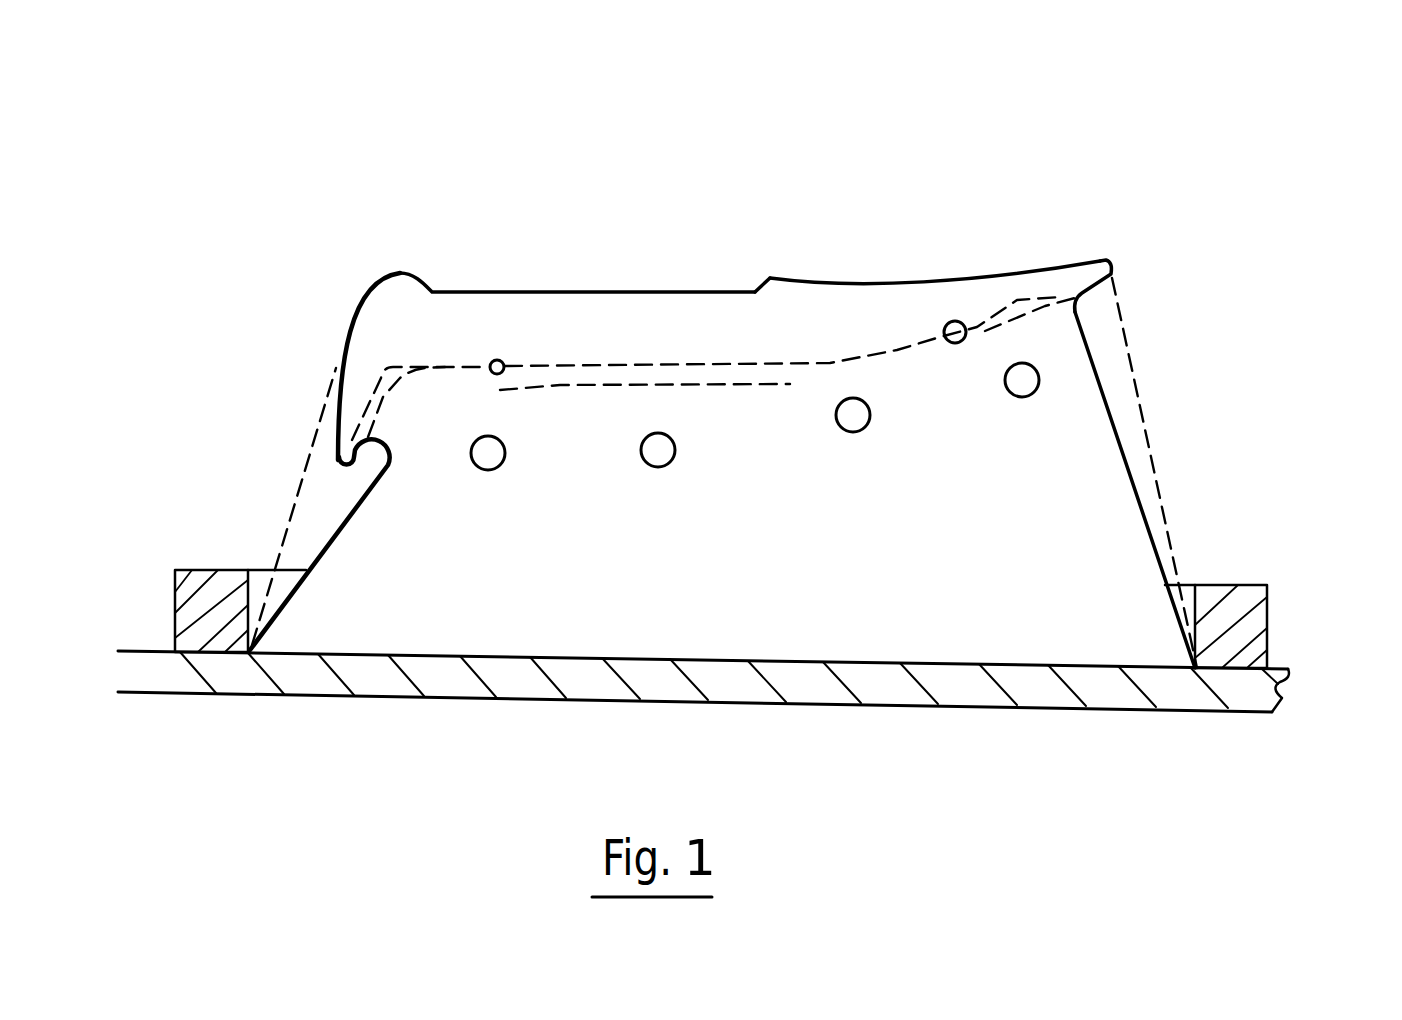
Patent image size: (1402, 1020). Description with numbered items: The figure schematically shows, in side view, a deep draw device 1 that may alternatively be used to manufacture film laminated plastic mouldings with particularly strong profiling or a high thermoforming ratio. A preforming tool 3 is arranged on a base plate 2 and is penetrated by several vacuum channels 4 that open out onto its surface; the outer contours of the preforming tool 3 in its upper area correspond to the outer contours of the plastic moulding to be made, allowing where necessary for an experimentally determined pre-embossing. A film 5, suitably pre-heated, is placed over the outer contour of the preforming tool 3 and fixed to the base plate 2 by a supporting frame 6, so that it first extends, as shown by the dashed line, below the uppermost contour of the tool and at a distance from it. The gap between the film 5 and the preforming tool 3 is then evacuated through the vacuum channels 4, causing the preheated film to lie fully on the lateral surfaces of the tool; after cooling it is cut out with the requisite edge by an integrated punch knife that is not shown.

The deep draw device 1 is at (247, 277).
The base plate 2 is at (958, 695).
The preforming tool 3 is at (1107, 477).
The vacuum channels 4 is at (492, 437).
The film 5 is at (807, 280).
The supporting frame 6 is at (1247, 633).